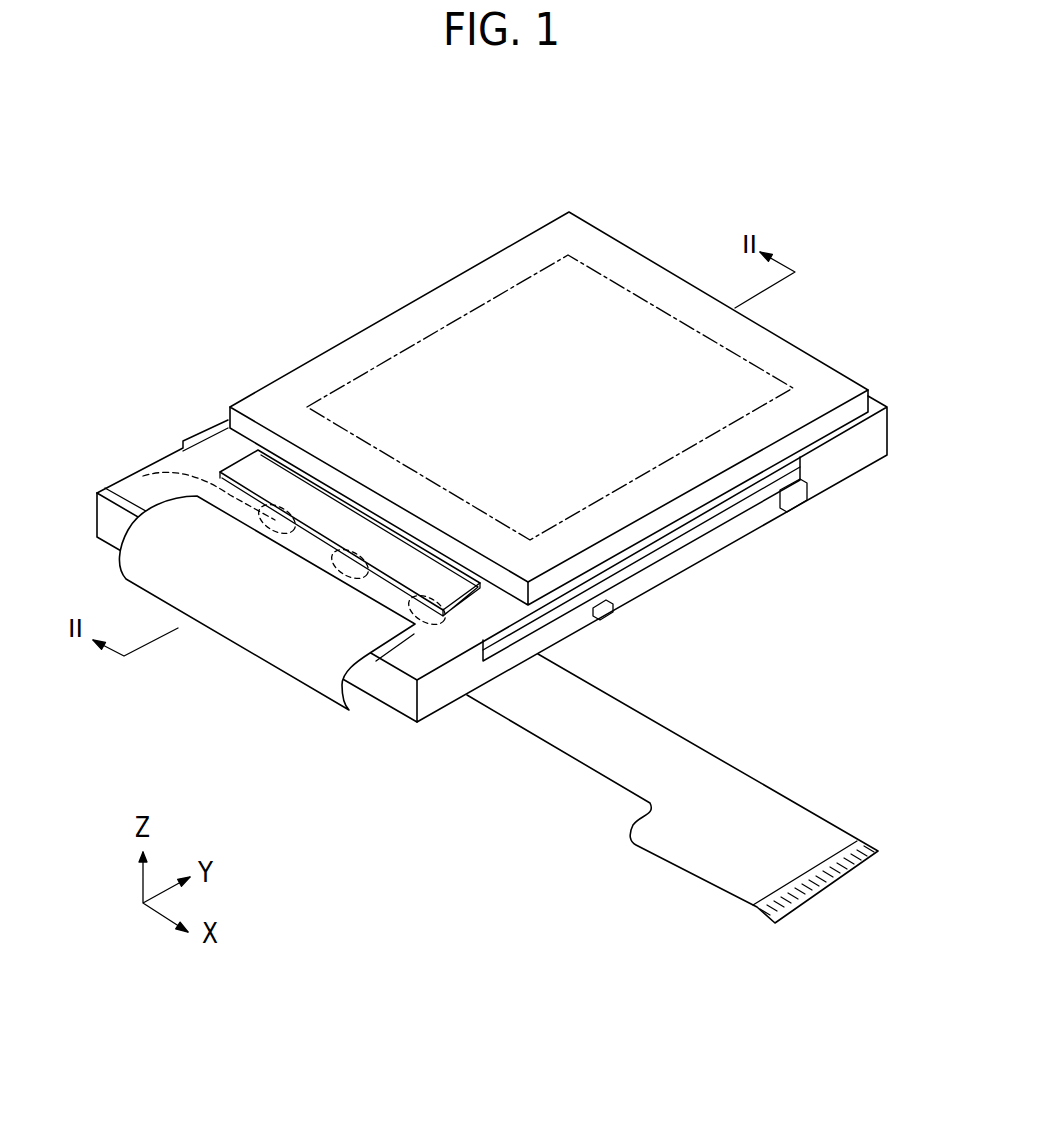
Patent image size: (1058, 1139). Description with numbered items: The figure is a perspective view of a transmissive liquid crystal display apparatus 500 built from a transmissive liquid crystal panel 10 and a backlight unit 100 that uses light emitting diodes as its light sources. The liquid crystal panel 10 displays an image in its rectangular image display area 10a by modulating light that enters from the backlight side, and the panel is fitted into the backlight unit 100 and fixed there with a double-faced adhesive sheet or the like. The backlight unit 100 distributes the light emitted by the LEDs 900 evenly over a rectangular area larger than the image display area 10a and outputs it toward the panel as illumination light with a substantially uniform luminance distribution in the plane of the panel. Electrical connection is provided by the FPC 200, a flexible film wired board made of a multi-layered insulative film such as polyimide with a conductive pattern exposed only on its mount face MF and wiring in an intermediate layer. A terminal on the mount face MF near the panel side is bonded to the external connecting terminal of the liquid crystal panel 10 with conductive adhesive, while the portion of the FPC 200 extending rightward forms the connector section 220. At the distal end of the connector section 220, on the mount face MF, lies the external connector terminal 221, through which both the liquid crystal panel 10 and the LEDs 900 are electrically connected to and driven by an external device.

The liquid crystal display apparatus 500 is at (372, 186).
The liquid crystal panel 10 is at (320, 353).
The image display area 10a is at (407, 347).
The backlight unit 100 is at (750, 525).
The FPC 200 is at (297, 665).
The connector section 220 is at (710, 788).
The external connector terminal 221 is at (878, 851).
The LED 900 is at (142, 476).
The mount face MF is at (343, 705).